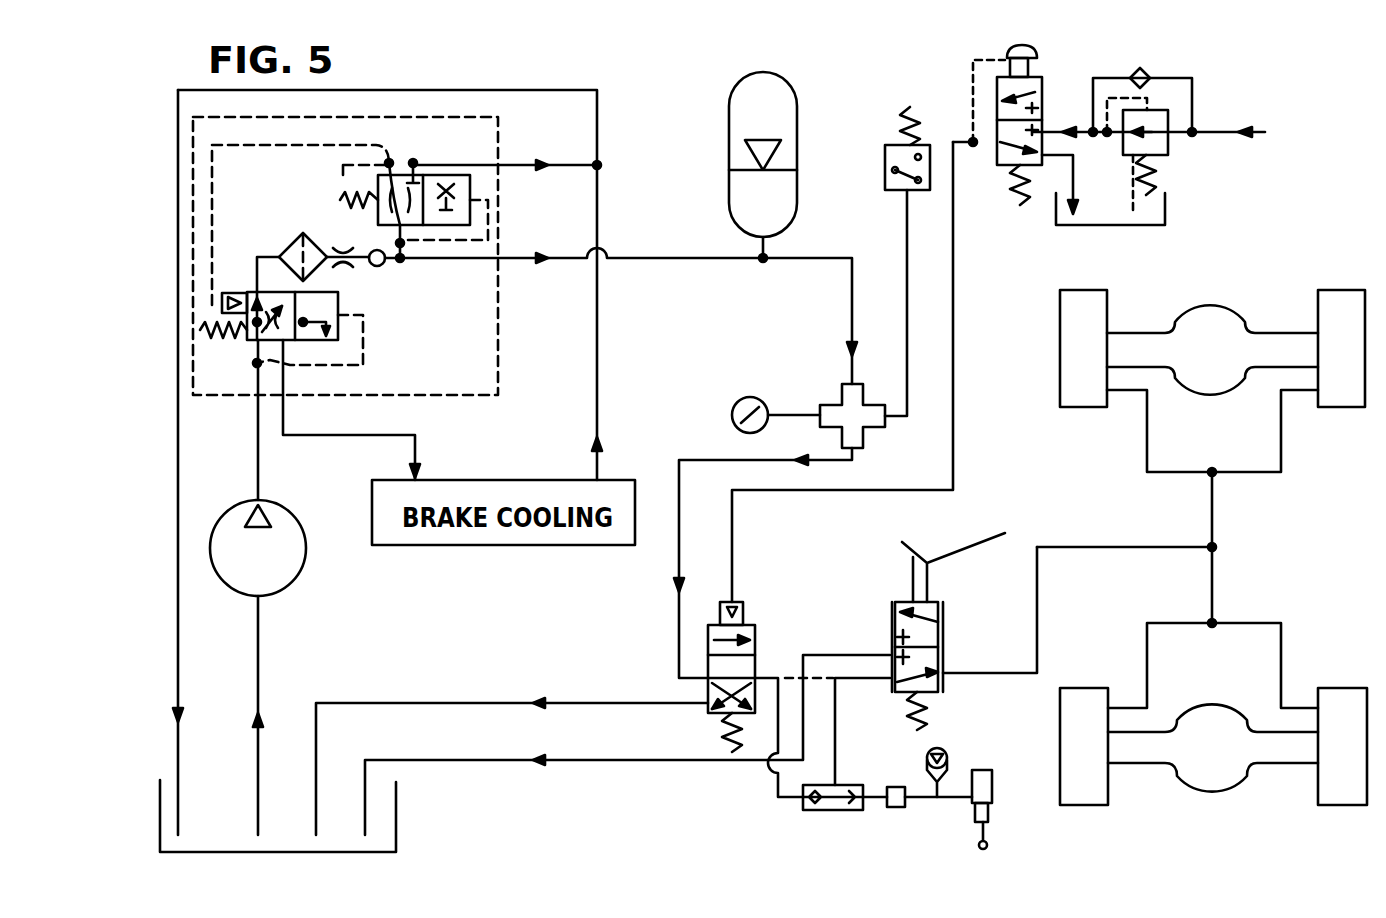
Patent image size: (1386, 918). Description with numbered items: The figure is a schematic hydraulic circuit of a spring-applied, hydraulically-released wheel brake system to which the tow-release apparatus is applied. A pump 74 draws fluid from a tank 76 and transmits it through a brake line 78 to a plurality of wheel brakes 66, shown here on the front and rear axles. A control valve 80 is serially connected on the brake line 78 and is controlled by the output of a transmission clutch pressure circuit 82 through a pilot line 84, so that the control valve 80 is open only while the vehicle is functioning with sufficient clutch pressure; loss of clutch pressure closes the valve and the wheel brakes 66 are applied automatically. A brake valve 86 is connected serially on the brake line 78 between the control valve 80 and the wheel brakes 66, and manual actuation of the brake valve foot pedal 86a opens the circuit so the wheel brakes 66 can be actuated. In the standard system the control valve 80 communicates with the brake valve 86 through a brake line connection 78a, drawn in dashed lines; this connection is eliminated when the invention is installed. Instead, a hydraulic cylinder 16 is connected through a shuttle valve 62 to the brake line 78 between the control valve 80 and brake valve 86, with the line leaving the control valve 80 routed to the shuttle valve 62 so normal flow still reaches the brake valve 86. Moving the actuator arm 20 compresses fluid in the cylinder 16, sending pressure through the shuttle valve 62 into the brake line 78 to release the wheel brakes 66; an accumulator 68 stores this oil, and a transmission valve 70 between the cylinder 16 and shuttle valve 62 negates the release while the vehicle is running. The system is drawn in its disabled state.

The hydraulic cylinder 16 is at (993, 790).
The actuator arm 20 is at (988, 833).
The shuttle valve 62 is at (832, 810).
The wheel brakes 66 is at (1085, 289).
The accumulator 68 is at (947, 755).
The transmission valve 70 is at (893, 808).
The pump 74 is at (304, 580).
The tank 76 is at (398, 827).
The brake line 78 is at (1147, 462).
The brake line connection 78a is at (788, 677).
The control valve 80 is at (761, 607).
The transmission clutch pressure circuit 82 is at (1196, 182).
The pilot line 84 is at (960, 352).
The brake valve 86 is at (939, 617).
The brake valve foot pedal 86a is at (923, 553).